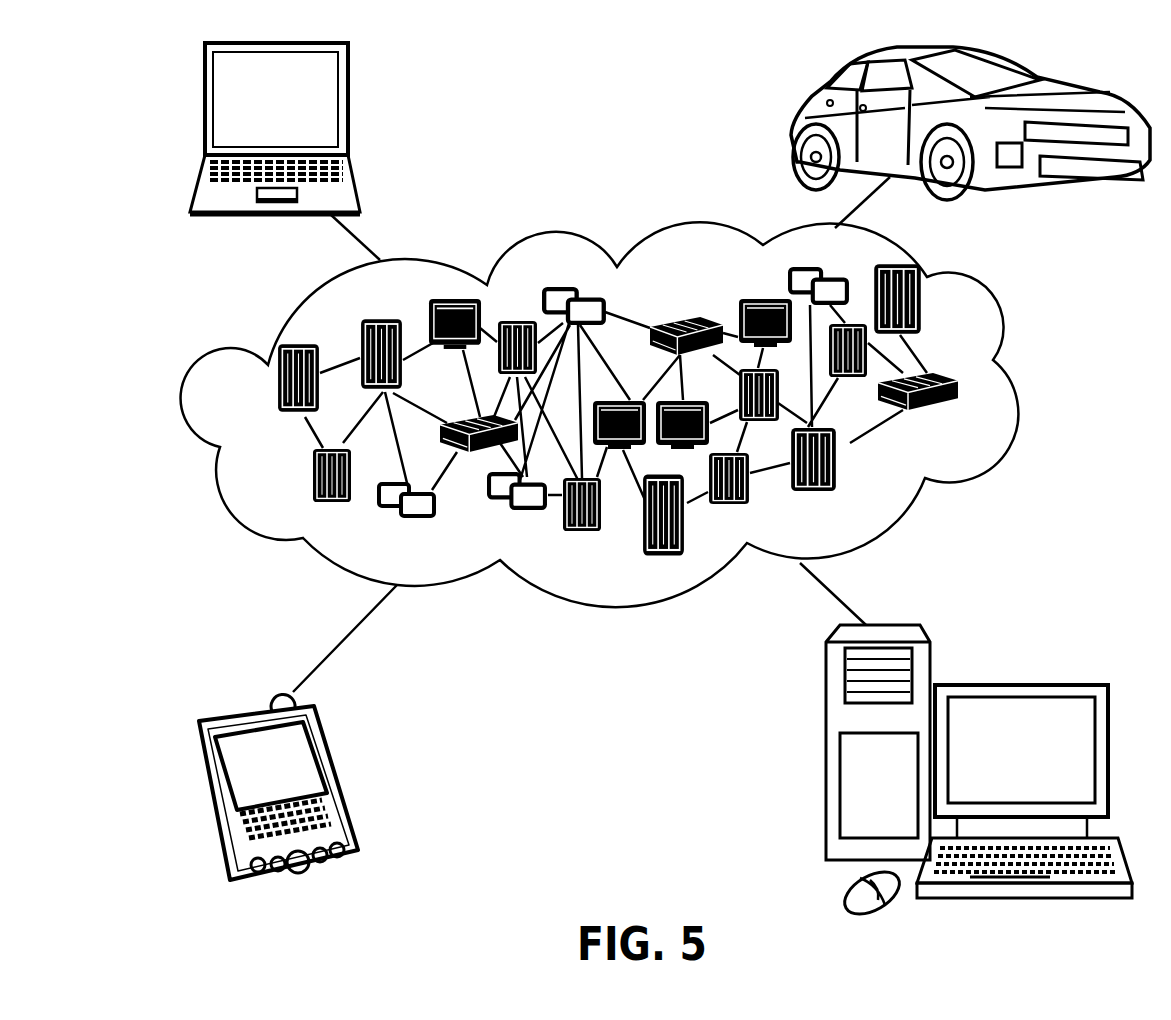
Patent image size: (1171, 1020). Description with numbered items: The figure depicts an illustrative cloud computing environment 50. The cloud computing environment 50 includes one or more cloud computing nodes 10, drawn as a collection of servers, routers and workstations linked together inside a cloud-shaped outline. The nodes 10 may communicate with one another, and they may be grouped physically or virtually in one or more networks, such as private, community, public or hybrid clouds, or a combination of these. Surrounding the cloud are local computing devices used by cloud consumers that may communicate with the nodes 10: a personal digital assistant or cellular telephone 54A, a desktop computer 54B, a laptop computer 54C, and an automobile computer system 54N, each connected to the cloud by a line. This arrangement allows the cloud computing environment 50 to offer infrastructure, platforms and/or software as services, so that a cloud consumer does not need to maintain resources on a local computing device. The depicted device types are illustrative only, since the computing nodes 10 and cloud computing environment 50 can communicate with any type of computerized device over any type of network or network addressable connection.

The cloud computing nodes 10 is at (965, 420).
The cloud computing environment 50 is at (1023, 387).
The personal digital assistant (PDA) or cellular telephone 54A is at (340, 778).
The desktop computer 54B is at (1024, 686).
The laptop computer 54C is at (352, 103).
The automobile computer system 54N is at (797, 125).